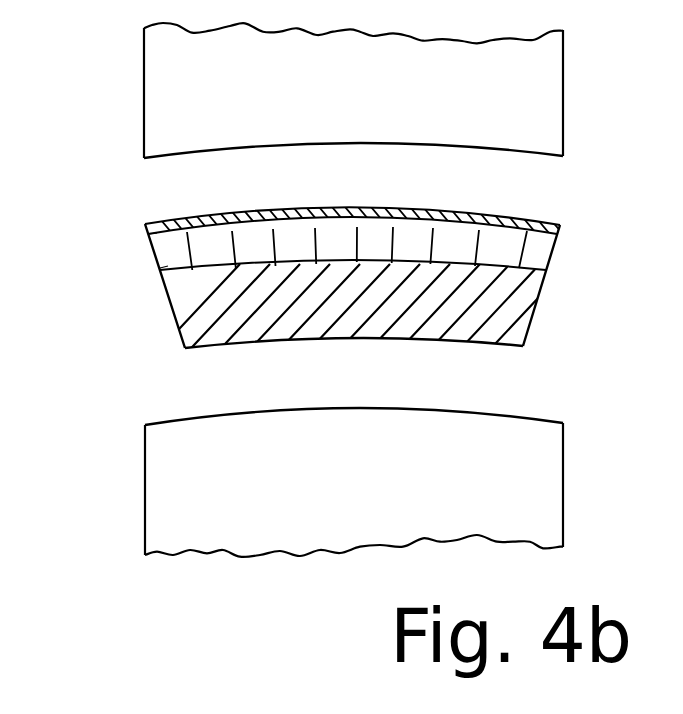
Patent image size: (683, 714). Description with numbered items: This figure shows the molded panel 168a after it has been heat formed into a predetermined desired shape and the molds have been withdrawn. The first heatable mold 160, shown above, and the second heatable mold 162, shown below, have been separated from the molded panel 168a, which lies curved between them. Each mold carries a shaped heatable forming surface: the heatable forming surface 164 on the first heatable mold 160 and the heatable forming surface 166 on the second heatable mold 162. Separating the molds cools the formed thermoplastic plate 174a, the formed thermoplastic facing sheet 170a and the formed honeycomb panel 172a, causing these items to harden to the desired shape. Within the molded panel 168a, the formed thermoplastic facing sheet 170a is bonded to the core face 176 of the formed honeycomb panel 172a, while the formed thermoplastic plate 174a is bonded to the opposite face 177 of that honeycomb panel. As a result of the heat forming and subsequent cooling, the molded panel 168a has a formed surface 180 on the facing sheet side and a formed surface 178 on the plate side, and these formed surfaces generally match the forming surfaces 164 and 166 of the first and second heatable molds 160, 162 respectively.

The first heatable mold 160 is at (165, 90).
The second heatable mold 162 is at (170, 480).
The heatable forming surface 164 is at (190, 158).
The heatable forming surface 166 is at (178, 420).
The molded panel 168a is at (333, 288).
The formed thermoplastic facing sheet 170a is at (150, 235).
The formed honeycomb panel 172a is at (170, 262).
The formed thermoplastic plate 174a is at (185, 347).
The core face 176 is at (557, 237).
The opposite face 177 is at (548, 266).
The formed surface 178 is at (497, 347).
The formed surface 180 is at (560, 225).